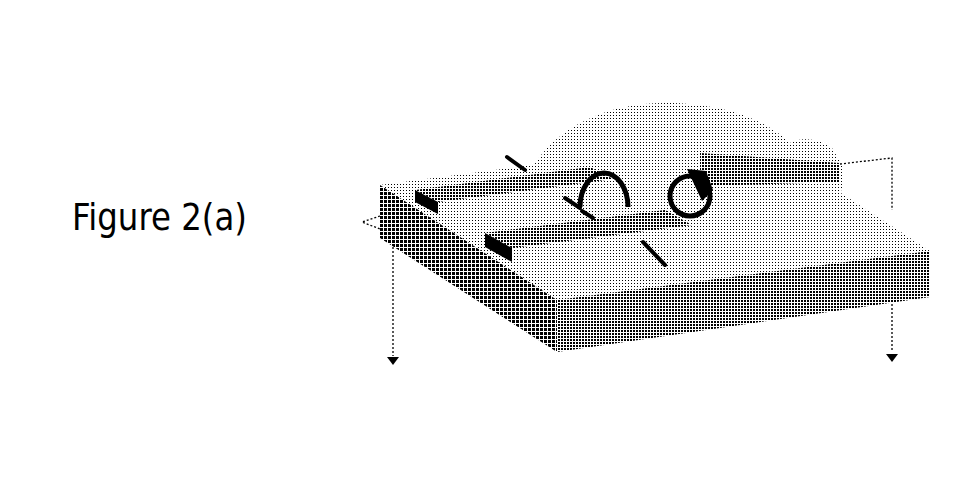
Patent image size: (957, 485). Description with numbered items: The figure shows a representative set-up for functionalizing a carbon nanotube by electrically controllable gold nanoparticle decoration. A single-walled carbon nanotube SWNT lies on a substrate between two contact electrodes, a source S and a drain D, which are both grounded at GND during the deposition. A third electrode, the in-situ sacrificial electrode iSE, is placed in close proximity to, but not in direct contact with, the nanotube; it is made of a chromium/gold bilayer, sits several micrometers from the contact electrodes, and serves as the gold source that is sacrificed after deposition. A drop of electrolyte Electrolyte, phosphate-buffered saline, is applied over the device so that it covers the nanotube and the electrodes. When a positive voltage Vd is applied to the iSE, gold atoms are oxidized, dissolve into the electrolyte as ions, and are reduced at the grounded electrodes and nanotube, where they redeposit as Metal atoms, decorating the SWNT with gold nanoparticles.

The electrolyte Electrolyte is at (663, 130).
The single-walled carbon nanotube SWNT is at (496, 145).
The source contact electrode S is at (514, 190).
The drain contact electrode D is at (588, 236).
The metal Metal is at (646, 192).
The in-situ sacrificial electrode iSE is at (770, 169).
The ground GND is at (388, 310).
The positive voltage Vd is at (868, 260).